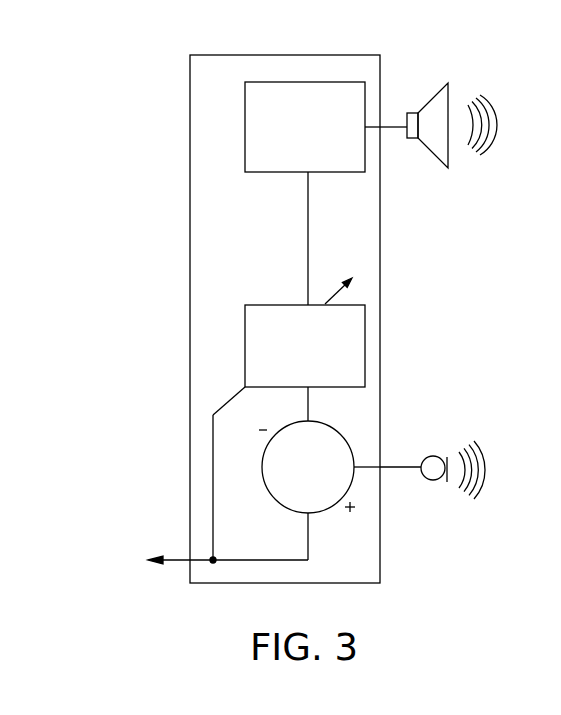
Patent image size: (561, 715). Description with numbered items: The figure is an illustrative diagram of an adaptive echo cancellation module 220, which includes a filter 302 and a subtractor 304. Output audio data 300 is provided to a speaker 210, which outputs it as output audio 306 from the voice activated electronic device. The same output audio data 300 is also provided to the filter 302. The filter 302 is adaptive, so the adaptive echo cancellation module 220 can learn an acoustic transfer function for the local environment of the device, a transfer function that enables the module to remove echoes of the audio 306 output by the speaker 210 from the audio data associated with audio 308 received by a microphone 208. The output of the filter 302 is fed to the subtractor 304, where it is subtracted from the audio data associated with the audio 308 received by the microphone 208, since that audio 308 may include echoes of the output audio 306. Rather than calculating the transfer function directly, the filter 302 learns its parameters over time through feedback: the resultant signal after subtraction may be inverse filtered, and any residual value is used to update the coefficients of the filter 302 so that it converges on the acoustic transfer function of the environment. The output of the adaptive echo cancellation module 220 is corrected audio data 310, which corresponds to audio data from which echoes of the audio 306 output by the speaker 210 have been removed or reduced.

The adaptive echo cancellation module 220 is at (300, 55).
The output audio data 300 is at (267, 172).
The filter 302 is at (268, 305).
The subtractor 304 is at (333, 508).
The speaker 210 is at (432, 152).
The output audio 306 is at (484, 156).
The microphone 208 is at (436, 457).
The audio received by microphone 308 is at (459, 489).
The corrected audio data 310 is at (86, 523).